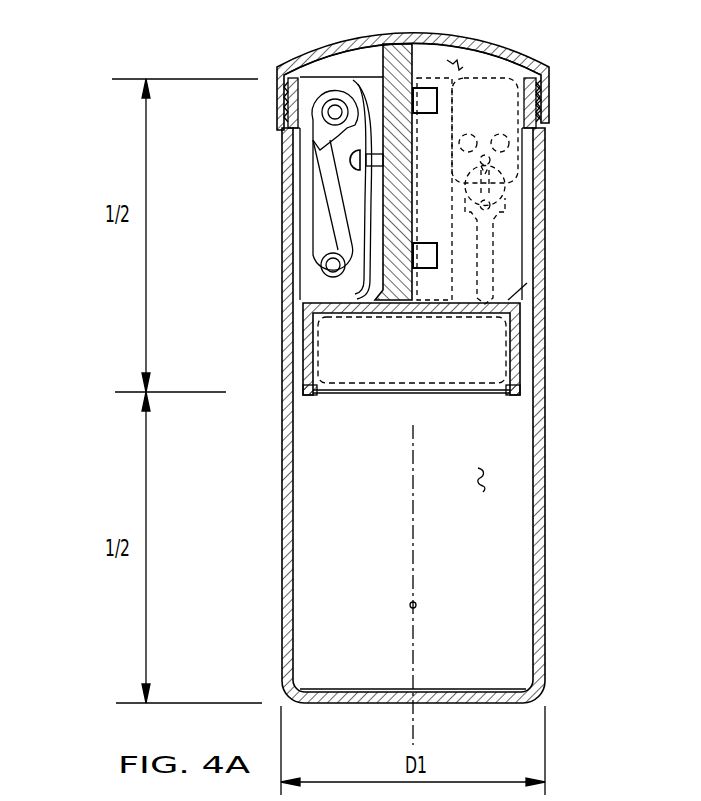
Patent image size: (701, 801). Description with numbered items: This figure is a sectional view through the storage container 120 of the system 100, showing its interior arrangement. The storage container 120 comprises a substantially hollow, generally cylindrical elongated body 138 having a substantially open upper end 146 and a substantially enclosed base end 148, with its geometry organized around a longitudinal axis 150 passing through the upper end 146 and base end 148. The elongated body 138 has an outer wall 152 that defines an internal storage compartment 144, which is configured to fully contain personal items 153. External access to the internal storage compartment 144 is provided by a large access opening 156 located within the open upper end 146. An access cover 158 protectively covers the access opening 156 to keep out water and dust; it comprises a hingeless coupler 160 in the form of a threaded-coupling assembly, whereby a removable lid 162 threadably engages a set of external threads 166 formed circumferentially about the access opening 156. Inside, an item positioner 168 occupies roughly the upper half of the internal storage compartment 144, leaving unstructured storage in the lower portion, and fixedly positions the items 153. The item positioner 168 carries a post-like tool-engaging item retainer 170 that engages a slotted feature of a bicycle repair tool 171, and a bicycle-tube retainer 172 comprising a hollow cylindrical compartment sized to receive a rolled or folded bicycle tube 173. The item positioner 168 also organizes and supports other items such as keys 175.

The dispenser 100 is at (176, 44).
The storage container 120 is at (138, 61).
The elongated body 138 is at (550, 536).
The internal storage compartment 144 is at (482, 485).
The open upper end 146 is at (548, 137).
The base end 148 is at (470, 704).
The longitudinal axis 150 is at (417, 604).
The outer wall 152 is at (282, 632).
The personal items 153 is at (298, 154).
The access opening 156 is at (463, 70).
The access cover 158 is at (552, 88).
The hingeless coupler 160 is at (552, 108).
The removable lid 162 is at (480, 37).
The external threads 166 is at (548, 118).
The item positioner 168 is at (528, 406).
The item retainer 170 is at (423, 92).
The bicycle repair tool 171 is at (303, 226).
The bicycle-tube retainer 172 is at (522, 342).
The bicycle tube 173 is at (386, 385).
The keys 175 is at (517, 227).